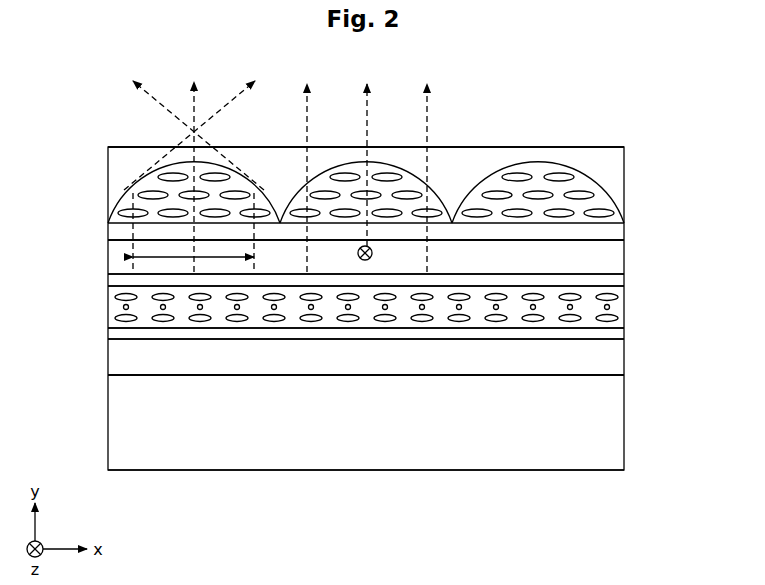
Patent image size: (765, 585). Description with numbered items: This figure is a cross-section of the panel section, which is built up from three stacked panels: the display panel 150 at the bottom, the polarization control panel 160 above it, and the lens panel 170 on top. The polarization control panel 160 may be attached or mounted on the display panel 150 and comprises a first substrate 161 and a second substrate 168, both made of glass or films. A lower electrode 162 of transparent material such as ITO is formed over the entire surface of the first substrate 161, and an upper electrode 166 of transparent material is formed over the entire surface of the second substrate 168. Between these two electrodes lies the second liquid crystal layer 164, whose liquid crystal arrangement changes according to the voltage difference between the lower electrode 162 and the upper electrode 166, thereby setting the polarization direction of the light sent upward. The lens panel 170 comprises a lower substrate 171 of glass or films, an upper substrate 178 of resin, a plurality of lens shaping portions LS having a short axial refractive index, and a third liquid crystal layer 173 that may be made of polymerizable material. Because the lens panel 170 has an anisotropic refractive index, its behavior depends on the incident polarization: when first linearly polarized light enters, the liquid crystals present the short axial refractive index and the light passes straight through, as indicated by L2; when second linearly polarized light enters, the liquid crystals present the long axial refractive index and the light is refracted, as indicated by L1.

The display panel 150 is at (100, 376).
The polarization control panel 160 is at (100, 242).
The first substrate 161 is at (615, 358).
The lower electrode 162 is at (615, 335).
The second liquid crystal layer 164 is at (615, 308).
The upper electrode 166 is at (615, 282).
The second substrate 168 is at (615, 257).
The lens panel 170 is at (100, 148).
The lower substrate 171 is at (615, 233).
The third liquid crystal layer 173 is at (605, 211).
The upper substrate 178 is at (615, 158).
The lens shaping portions LS is at (603, 180).
The refracted light L1 is at (215, 165).
The transmitted light L2 is at (392, 165).